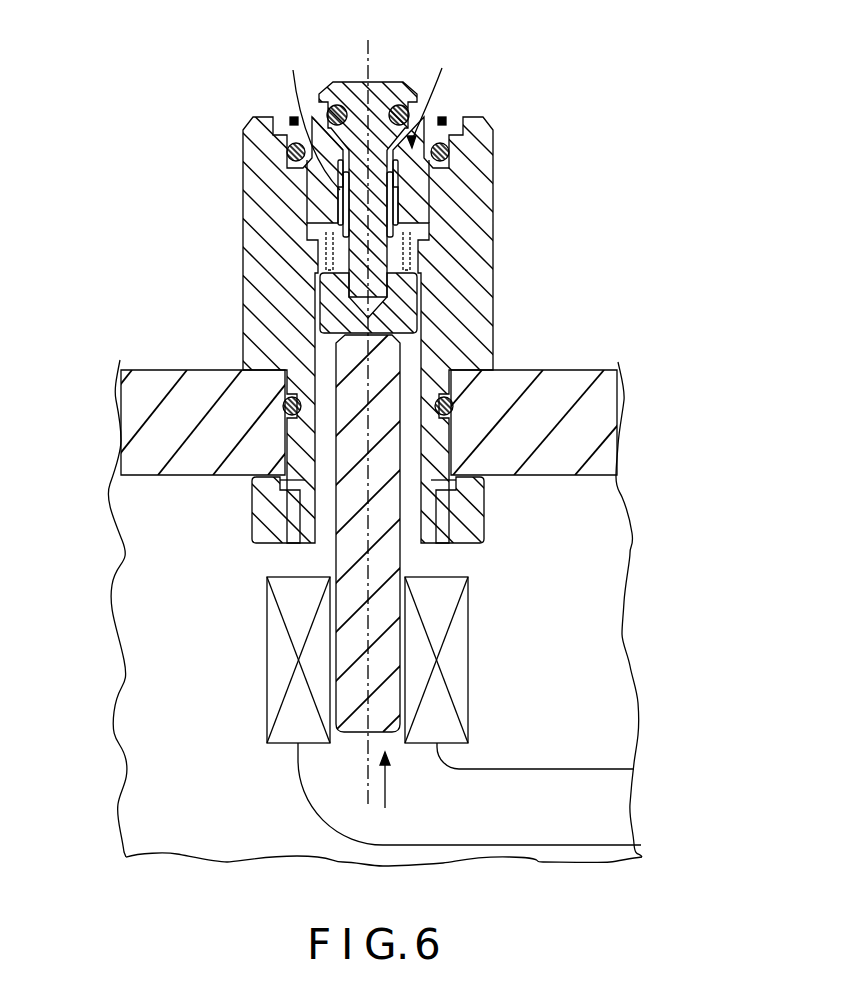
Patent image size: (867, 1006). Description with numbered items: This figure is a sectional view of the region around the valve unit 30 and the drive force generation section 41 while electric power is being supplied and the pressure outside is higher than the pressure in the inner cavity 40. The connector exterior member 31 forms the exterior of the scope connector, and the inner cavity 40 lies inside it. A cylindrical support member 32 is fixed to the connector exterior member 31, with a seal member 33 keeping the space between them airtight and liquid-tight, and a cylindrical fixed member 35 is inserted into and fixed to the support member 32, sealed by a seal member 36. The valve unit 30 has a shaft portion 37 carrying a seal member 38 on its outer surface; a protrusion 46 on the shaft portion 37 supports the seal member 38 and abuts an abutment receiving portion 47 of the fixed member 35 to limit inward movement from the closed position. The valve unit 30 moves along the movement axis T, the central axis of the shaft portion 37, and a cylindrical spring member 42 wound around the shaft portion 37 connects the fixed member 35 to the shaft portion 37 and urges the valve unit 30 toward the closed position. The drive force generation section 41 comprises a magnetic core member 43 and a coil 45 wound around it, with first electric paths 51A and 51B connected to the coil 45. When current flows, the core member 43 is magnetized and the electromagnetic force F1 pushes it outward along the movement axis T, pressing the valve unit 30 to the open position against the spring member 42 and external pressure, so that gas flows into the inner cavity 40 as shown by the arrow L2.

The valve unit 30 is at (387, 78).
The connector exterior member 31 is at (562, 380).
The support member 32 is at (490, 301).
The seal member 33 is at (286, 396).
The fixed member 35 is at (432, 186).
The seal member 36 is at (287, 152).
The shaft portion 37 is at (386, 218).
The seal member 38 is at (327, 138).
The inner cavity 40 is at (632, 552).
The drive force generation section 41 is at (390, 539).
The spring member 42 is at (416, 268).
The core member 43 is at (345, 702).
The coil 45 is at (278, 660).
The protrusion 46 is at (338, 190).
The abutment receiving portion 47 is at (345, 180).
The first electric path 51A is at (547, 769).
The first electric path 51B is at (547, 845).
The arrow L2 is at (427, 95).
The movement axis T is at (368, 763).
The electromagnetic force F1 is at (398, 780).